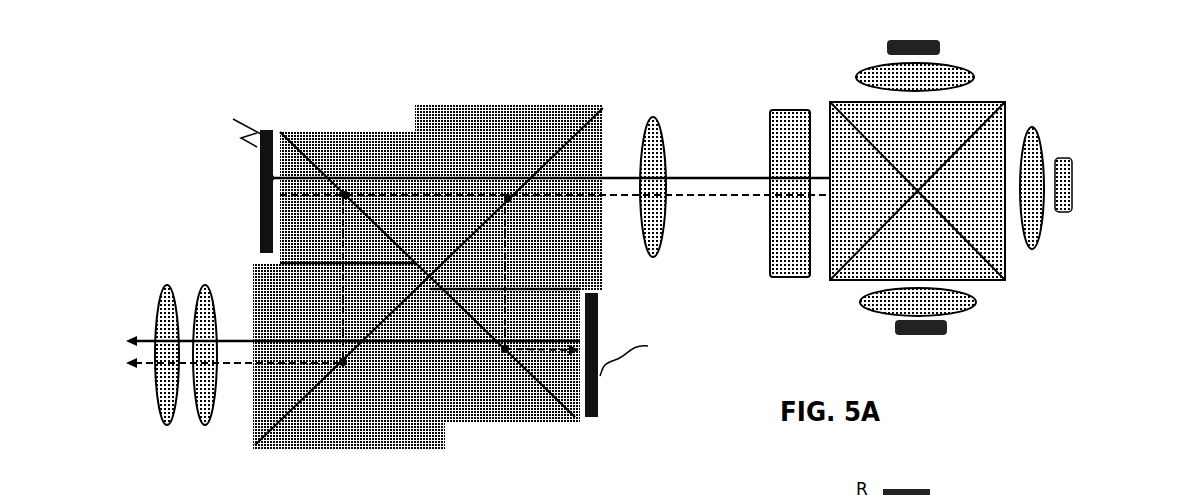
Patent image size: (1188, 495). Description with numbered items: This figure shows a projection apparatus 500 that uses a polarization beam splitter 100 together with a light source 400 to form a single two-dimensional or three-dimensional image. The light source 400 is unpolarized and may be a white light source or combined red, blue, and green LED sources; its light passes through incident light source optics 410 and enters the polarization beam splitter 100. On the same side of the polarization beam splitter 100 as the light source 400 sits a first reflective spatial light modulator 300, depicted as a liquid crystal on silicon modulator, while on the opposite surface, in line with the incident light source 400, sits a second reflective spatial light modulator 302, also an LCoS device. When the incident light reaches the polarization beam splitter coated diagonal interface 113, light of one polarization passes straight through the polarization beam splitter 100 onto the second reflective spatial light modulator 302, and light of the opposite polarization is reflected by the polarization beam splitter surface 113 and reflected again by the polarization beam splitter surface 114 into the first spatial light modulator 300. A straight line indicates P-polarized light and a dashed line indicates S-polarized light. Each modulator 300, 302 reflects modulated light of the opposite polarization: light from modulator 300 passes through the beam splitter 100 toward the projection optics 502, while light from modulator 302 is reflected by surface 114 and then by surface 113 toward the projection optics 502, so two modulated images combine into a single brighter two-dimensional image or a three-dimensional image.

The polarization beam splitter 100 is at (621, 99).
The polarization beam splitter coated diagonal interface 113 is at (318, 384).
The polarization beam splitter surface 114 is at (318, 170).
The first reflective spatial light modulator 300 is at (600, 398).
The second reflective spatial light modulator 302 is at (258, 216).
The light source 400 is at (1026, 98).
The incident light source optics 410 is at (658, 243).
The projection apparatus 500 is at (143, 193).
The projection optics 502 is at (152, 326).